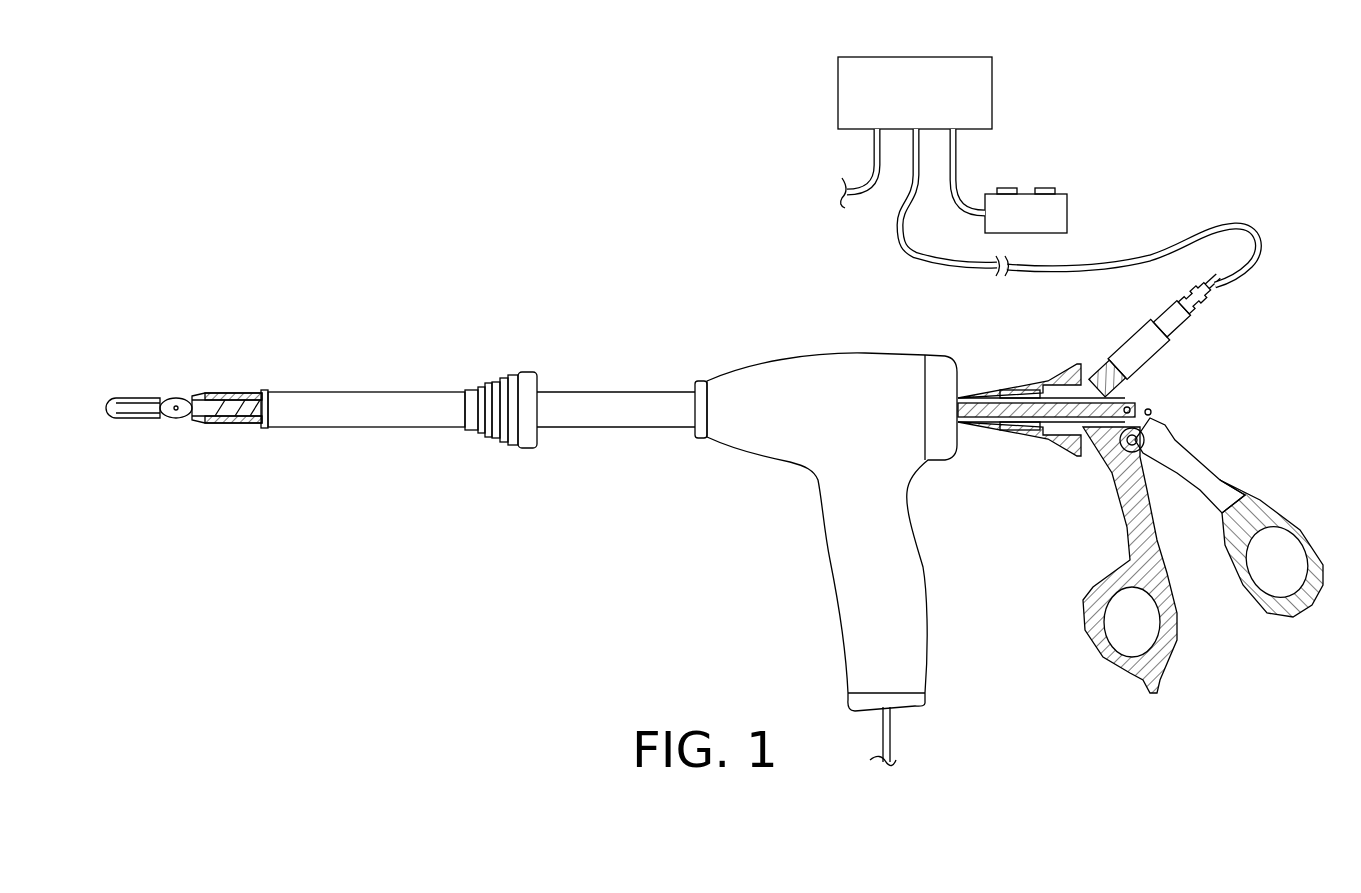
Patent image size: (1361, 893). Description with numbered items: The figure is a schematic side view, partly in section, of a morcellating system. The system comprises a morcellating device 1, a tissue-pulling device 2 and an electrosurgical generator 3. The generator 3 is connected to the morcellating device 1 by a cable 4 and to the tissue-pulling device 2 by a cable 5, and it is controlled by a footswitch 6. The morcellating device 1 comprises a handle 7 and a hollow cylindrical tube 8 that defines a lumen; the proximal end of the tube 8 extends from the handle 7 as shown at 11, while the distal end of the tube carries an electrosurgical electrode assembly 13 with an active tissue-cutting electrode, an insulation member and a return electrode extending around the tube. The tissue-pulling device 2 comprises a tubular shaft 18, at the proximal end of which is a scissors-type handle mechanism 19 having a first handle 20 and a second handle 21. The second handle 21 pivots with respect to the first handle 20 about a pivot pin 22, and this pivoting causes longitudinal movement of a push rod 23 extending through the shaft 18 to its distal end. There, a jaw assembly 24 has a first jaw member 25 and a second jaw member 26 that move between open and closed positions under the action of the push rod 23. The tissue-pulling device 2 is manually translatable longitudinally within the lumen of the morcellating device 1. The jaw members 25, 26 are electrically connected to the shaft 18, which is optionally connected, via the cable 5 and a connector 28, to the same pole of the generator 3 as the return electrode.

The morcellating device 1 is at (586, 546).
The tissue-pulling device 2 is at (1212, 503).
The electrosurgical generator 3 is at (992, 70).
The cable 4 is at (890, 730).
The cable 5 is at (900, 228).
The footswitch 6 is at (1067, 208).
The handle 7 is at (925, 568).
The cylindrical tube 8 is at (400, 392).
The proximal end of the tube 11 is at (1046, 402).
The electrosurgical electrode assembly 13 is at (167, 418).
The tubular shaft 18 is at (233, 393).
The scissors-type handle mechanism 19 is at (1246, 539).
The first handle 20 is at (1110, 672).
The second handle 21 is at (1318, 605).
The pivot pin 22 is at (1150, 430).
The push rod 23 is at (990, 432).
The jaw assembly 24 is at (108, 404).
The first jaw member 25 is at (140, 393).
The second jaw member 26 is at (140, 425).
The connector 28 is at (1160, 360).